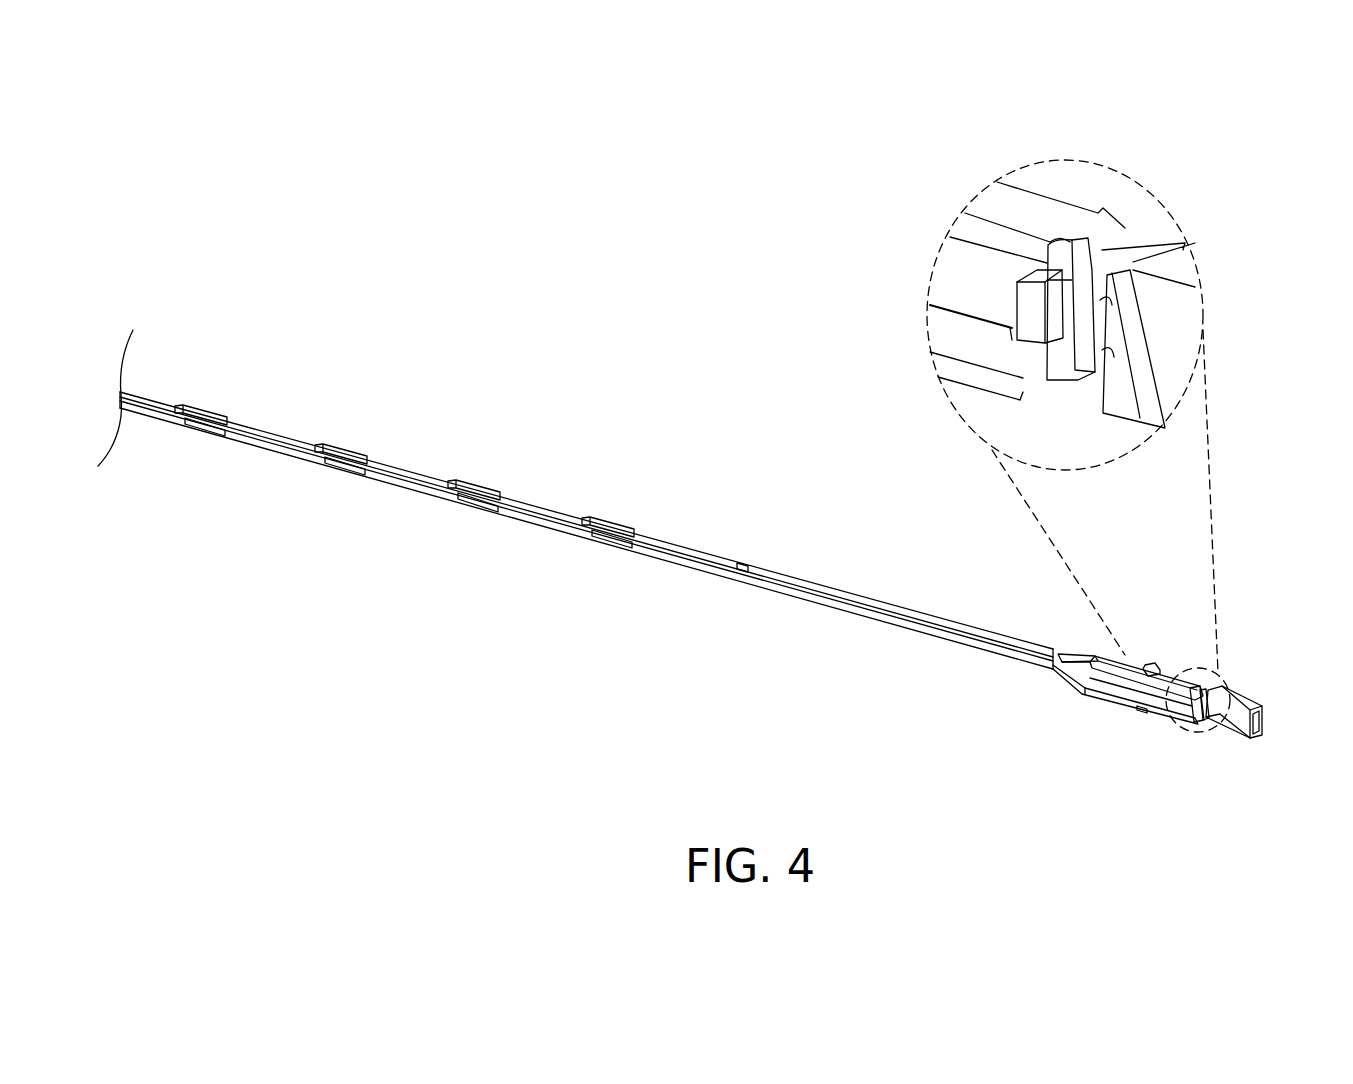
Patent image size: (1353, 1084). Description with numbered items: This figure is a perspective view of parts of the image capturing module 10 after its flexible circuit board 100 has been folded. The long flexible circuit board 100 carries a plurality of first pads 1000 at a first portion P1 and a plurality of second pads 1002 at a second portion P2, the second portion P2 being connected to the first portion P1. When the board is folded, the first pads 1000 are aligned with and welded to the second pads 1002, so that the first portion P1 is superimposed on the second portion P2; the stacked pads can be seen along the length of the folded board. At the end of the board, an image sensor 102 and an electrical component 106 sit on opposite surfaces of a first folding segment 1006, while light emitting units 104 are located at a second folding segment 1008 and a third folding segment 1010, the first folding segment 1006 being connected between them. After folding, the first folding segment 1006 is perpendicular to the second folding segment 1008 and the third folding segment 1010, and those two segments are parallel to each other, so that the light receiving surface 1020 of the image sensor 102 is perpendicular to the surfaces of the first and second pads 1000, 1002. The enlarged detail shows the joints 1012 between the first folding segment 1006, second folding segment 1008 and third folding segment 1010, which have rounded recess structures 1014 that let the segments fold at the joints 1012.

The image capturing module 10 is at (420, 215).
The flexible circuit board 100 is at (133, 401).
The first pads 1000 is at (218, 412).
The second pads 1002 is at (218, 424).
The first portion P1 is at (685, 540).
The second portion P2 is at (660, 570).
The image sensor 102 is at (1248, 692).
The light receiving surface 1020 is at (1258, 732).
The light emitting unit 104 is at (1155, 664).
The electrical component 106 is at (1178, 680).
The first folding segment 1006 is at (1070, 318).
The second folding segment 1008 is at (1030, 198).
The third folding segment 1010 is at (993, 383).
The joints 1012 is at (1125, 240).
The rounded recess structures 1014 is at (1065, 245).